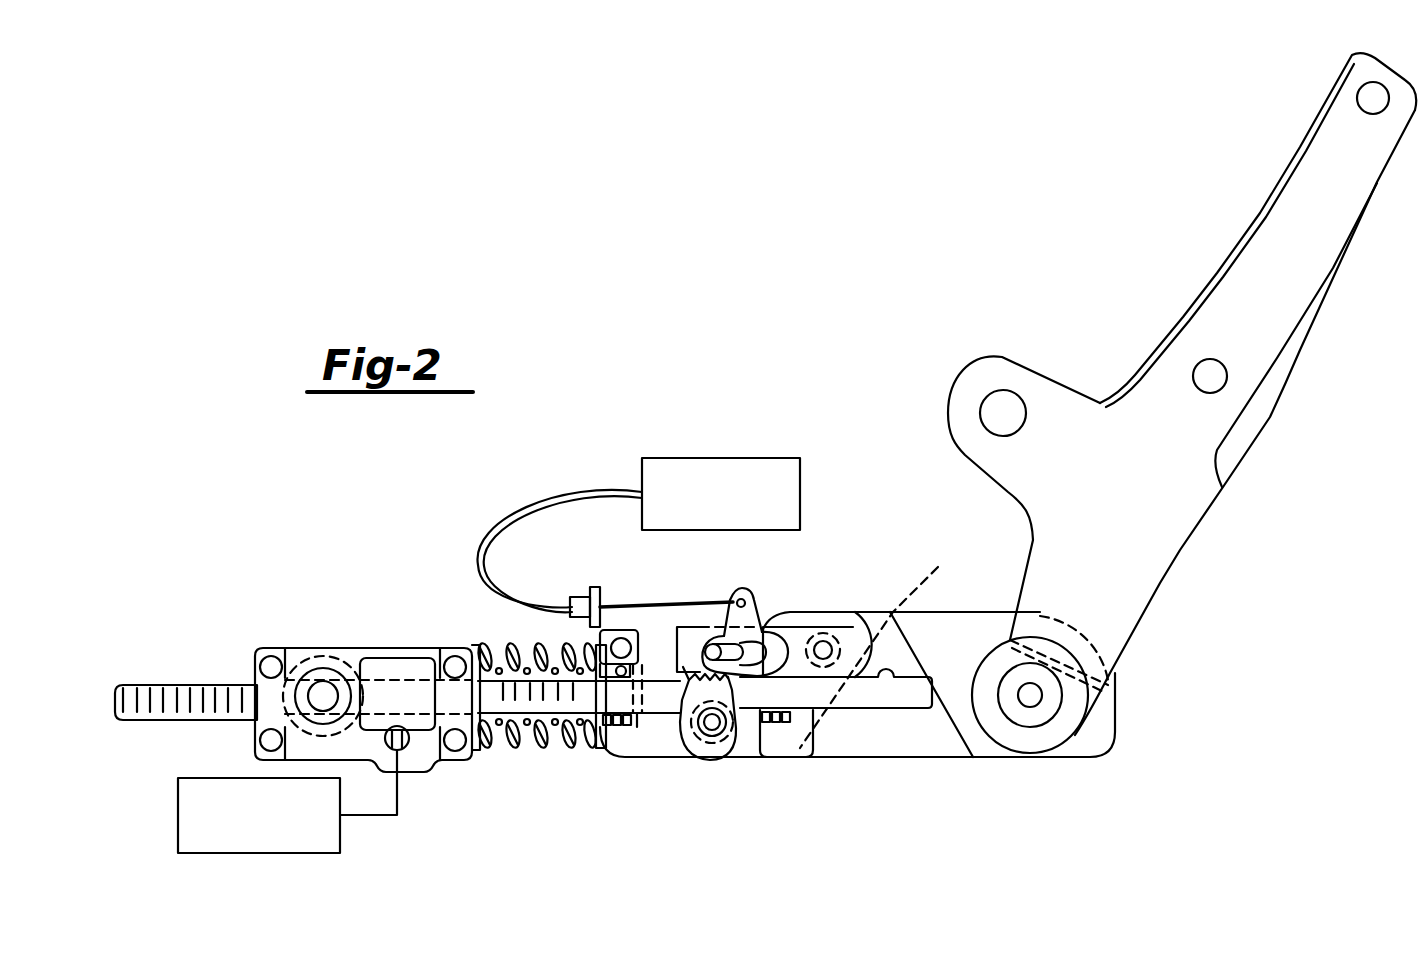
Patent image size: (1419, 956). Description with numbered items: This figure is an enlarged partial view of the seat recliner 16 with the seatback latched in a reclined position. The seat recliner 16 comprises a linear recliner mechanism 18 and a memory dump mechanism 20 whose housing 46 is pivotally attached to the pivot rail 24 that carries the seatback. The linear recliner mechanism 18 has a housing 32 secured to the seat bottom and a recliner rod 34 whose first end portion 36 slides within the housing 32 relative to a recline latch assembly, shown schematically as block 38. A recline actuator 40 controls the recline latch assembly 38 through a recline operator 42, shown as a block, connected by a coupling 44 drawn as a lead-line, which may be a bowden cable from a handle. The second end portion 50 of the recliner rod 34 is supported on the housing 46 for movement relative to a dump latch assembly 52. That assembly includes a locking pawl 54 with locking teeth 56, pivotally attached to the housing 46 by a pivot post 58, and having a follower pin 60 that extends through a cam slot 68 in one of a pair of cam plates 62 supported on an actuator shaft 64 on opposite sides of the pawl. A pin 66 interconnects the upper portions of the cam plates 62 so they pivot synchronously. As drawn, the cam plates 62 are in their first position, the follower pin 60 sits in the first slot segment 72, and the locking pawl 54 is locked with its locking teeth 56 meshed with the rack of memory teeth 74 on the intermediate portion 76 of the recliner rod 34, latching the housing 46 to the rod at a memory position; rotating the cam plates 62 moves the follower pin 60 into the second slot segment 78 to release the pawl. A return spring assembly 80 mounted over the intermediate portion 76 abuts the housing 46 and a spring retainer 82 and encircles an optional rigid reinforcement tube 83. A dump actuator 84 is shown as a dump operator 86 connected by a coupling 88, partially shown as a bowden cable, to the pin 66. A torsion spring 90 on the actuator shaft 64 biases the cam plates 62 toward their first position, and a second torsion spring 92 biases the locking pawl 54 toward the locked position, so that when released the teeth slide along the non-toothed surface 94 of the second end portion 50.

The seat recliner 16 is at (428, 542).
The linear recliner mechanism 18 is at (302, 648).
The memory dump mechanism 20 is at (878, 612).
The pivot rail 24 is at (1278, 211).
The housing 32 is at (348, 648).
The recliner rod 34 is at (650, 704).
The first end portion 36 is at (182, 693).
The recline latch assembly 38 is at (397, 668).
The recline actuator 40 is at (398, 822).
The recline operator 42 is at (340, 833).
The coupling 44 is at (402, 797).
The housing 46 is at (930, 617).
The second end portion 50 is at (905, 680).
The dump latch assembly 52 is at (790, 607).
The locking pawl 54 is at (797, 633).
The locking teeth 56 is at (736, 760).
The pivot post 58 is at (826, 643).
The follower pin 60 is at (705, 645).
The cam plates 62 is at (710, 767).
The actuator shaft 64 is at (707, 740).
The pin 66 is at (757, 596).
The cam slot 68 is at (740, 745).
The first slot segment 72 is at (712, 644).
The memory teeth 74 is at (633, 622).
The intermediate portion 76 is at (575, 612).
The second slot segment 78 is at (752, 650).
The return spring assembly 80 is at (525, 750).
The spring retainer 82 is at (485, 755).
The reinforcement tube 83 is at (575, 755).
The dump actuator 84 is at (606, 480).
The dump operator 86 is at (778, 470).
The coupling 88 is at (578, 485).
The torsion spring 90 is at (692, 752).
The second torsion spring 92 is at (954, 644).
The non-toothed surface 94 is at (878, 682).